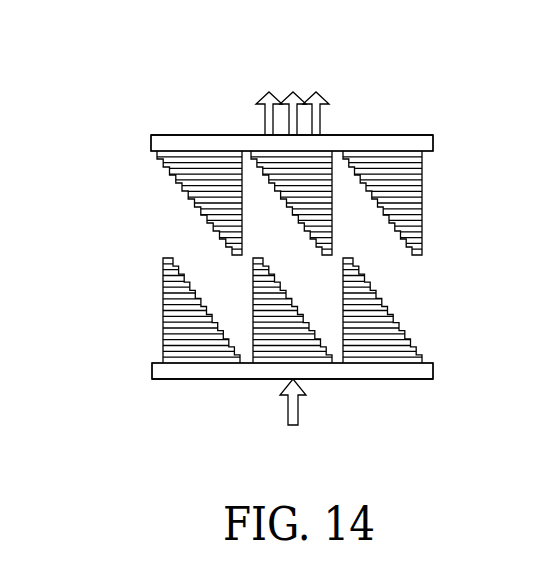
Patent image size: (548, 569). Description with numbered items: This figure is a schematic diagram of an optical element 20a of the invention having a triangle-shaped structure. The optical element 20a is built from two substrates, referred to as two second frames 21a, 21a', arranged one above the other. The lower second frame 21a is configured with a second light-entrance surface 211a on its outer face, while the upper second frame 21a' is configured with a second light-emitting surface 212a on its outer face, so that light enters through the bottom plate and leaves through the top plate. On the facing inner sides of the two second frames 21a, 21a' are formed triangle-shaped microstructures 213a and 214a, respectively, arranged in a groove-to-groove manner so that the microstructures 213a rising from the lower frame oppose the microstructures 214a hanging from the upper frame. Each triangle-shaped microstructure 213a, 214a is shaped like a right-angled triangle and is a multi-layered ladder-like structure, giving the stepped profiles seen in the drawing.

The optical element 20a is at (172, 39).
The second frame 21a is at (244, 372).
The second frame 21a' is at (244, 142).
The second light-entrance surface 211a is at (207, 379).
The second light-emitting surface 212a is at (203, 135).
The triangle-shaped microstructure 213a is at (162, 291).
The triangle-shaped microstructure 214a is at (192, 193).